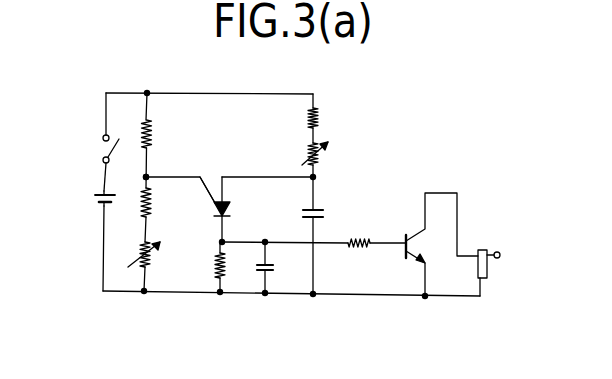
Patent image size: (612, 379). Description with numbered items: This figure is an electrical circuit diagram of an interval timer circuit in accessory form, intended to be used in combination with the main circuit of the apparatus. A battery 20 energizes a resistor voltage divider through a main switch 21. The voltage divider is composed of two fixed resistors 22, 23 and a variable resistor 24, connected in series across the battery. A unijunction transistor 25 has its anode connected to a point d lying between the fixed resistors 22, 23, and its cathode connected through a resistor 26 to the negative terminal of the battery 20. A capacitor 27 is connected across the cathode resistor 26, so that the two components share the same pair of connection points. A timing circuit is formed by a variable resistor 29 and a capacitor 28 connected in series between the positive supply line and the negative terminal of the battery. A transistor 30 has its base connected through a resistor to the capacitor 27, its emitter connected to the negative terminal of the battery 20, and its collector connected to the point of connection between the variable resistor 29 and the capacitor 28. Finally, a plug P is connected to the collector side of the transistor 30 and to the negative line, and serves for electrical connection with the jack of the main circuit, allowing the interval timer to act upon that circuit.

The battery 20 is at (94, 196).
The main switch 21 is at (98, 150).
The fixed resistor 22 is at (152, 131).
The fixed resistor 23 is at (151, 201).
The variable resistor 24 is at (152, 260).
The unijunction transistor 25 is at (214, 209).
The resistor 26 is at (214, 267).
The capacitor 27 is at (261, 271).
The capacitor 28 is at (323, 213).
The variable resistor 29 is at (319, 157).
The transistor 30 is at (415, 234).
The point d is at (143, 178).
The plug P is at (489, 271).